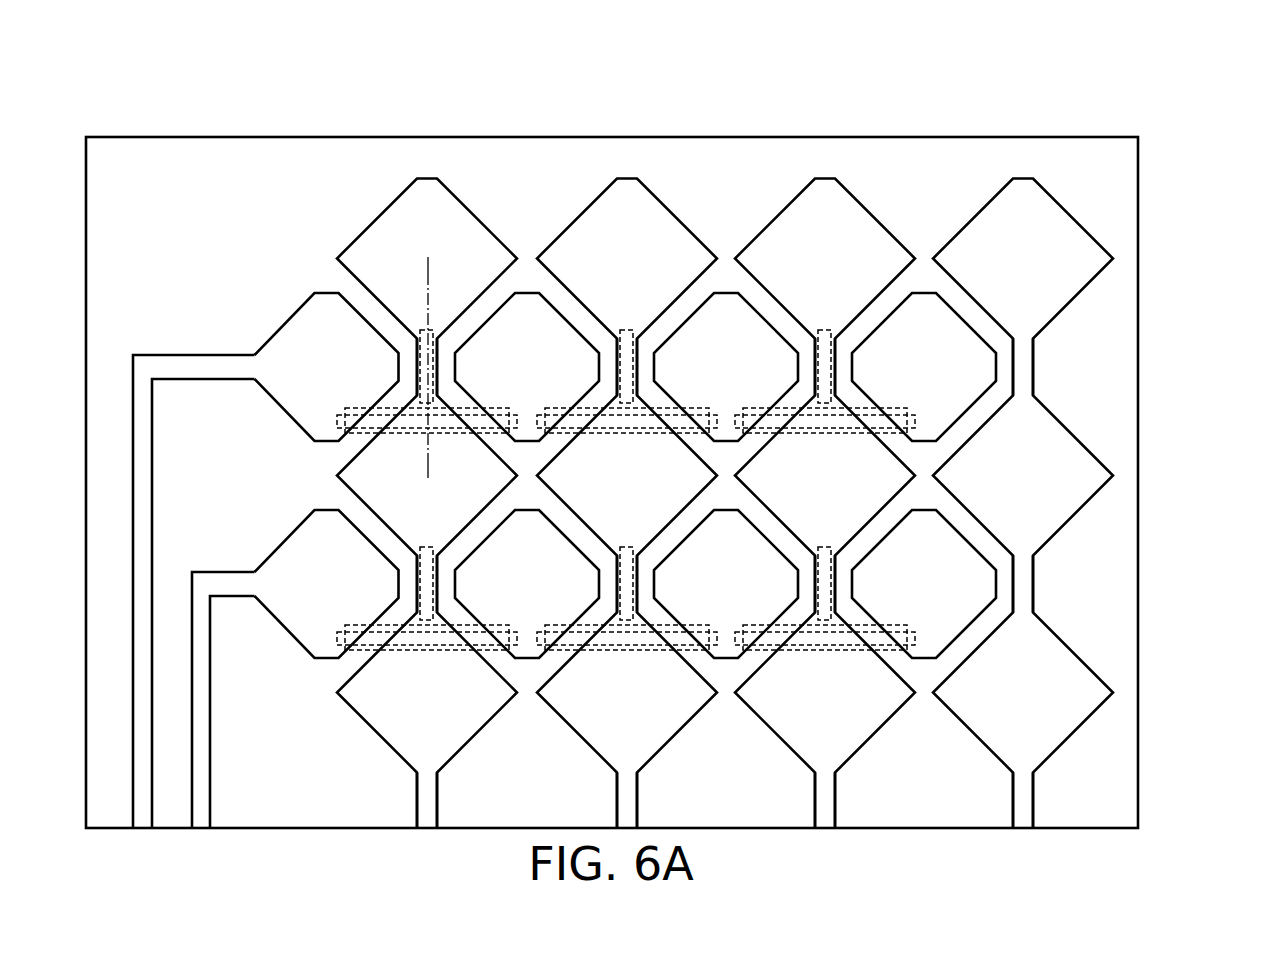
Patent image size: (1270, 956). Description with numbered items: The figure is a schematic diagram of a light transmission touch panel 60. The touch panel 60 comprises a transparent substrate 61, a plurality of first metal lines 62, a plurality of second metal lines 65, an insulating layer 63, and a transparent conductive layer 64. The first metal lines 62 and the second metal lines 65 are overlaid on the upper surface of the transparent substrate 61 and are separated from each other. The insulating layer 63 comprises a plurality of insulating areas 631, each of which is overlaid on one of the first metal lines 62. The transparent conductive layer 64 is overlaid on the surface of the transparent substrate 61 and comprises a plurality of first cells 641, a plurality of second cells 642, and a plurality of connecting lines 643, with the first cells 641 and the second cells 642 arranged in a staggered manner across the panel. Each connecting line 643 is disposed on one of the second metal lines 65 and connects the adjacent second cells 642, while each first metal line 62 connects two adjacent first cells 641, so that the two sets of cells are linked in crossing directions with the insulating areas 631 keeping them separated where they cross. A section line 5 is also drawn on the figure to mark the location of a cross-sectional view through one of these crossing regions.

The section line 5- 5 is at (421, 468).
The light transmission touch panel 60 is at (1145, 107).
The transparent substrate 61 is at (1038, 137).
The first metal lines 62 is at (337, 423).
The insulating layer 63 is at (948, 63).
The insulating areas 631 is at (860, 407).
The transparent conductive layer 64 is at (1207, 148).
The first cells 641 is at (922, 310).
The second cells 642 is at (1075, 216).
The connecting lines 643 is at (1035, 367).
The second metal lines 65 is at (428, 327).